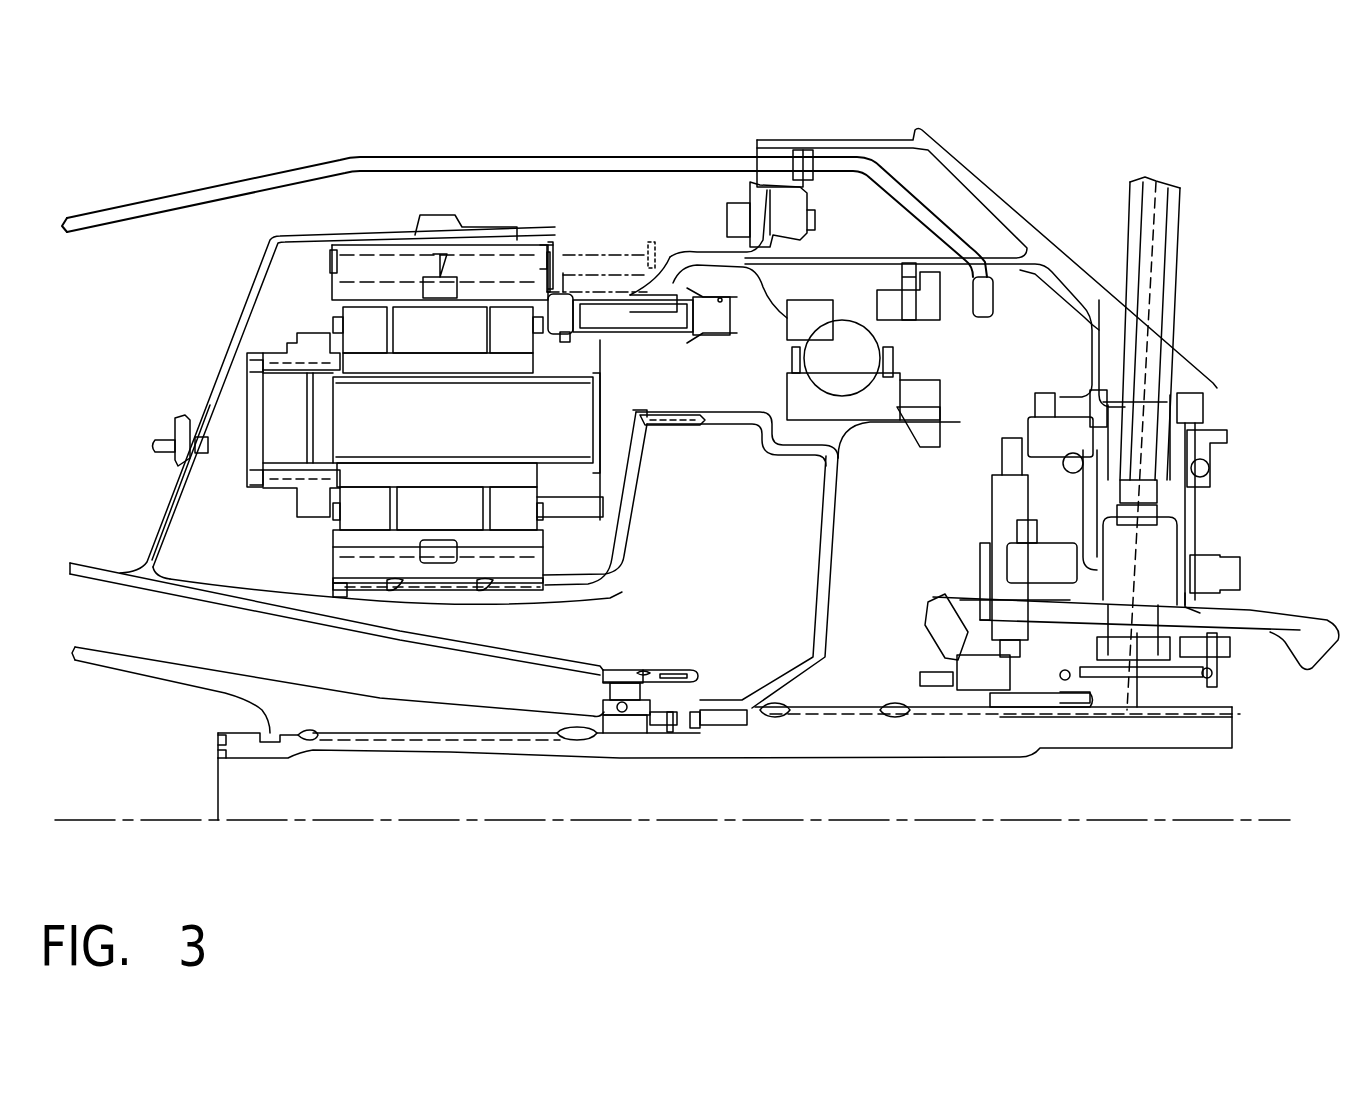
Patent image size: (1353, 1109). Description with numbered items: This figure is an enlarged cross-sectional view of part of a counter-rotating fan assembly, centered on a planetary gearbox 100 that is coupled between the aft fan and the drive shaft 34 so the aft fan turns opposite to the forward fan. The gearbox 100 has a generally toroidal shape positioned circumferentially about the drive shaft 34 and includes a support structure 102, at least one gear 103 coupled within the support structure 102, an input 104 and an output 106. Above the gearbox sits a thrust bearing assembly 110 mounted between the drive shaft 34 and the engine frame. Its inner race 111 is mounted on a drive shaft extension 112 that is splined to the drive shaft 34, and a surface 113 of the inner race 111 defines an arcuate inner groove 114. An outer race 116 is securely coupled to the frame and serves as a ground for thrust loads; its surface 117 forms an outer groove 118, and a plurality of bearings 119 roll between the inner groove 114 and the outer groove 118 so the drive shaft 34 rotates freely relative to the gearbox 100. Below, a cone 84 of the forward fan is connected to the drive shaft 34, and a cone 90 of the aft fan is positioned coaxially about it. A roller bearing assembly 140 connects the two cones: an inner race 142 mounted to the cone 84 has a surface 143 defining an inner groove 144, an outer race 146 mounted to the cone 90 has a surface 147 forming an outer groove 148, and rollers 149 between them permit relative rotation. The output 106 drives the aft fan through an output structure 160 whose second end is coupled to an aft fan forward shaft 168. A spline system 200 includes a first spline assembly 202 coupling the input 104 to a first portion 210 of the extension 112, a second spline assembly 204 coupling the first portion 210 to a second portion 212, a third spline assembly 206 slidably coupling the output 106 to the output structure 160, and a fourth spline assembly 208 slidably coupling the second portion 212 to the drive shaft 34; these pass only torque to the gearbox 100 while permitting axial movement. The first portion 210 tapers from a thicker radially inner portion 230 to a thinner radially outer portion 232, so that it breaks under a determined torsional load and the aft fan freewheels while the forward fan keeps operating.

The drive shaft 34 is at (806, 755).
The cone 84 is at (140, 647).
The cone 90 is at (283, 603).
The planetary gearbox 100 is at (615, 372).
The support structure 102 is at (268, 492).
The gear 103 is at (423, 420).
The input 104 is at (333, 570).
The output 106 is at (330, 248).
The thrust bearing assembly 110 is at (988, 368).
The inner race 111 is at (800, 403).
The drive shaft extension 112 is at (625, 505).
The surface 113 is at (893, 373).
The inner groove 114 is at (850, 392).
The outer race 116 is at (795, 300).
The surface 117 is at (790, 368).
The outer groove 118 is at (833, 327).
The bearings 119 is at (842, 358).
The roller bearing assembly 140 is at (675, 690).
The inner race 142 is at (621, 725).
The surface 143 is at (610, 702).
The inner groove 144 is at (615, 718).
The outer race 146 is at (623, 668).
The surface 147 is at (652, 725).
The outer groove 148 is at (632, 733).
The rollers 149 is at (618, 690).
The output structure 160 is at (227, 355).
The aft fan forward shaft 168 is at (152, 512).
The spline system 200 is at (603, 198).
The first spline assembly 202 is at (440, 602).
The second spline assembly 204 is at (732, 432).
The third spline assembly 206 is at (470, 198).
The fourth spline assembly 208 is at (826, 745).
The first portion 210 is at (838, 520).
The second portion 212 is at (618, 542).
The radially inner portion 230 is at (622, 595).
The radially outer portion 232 is at (652, 470).